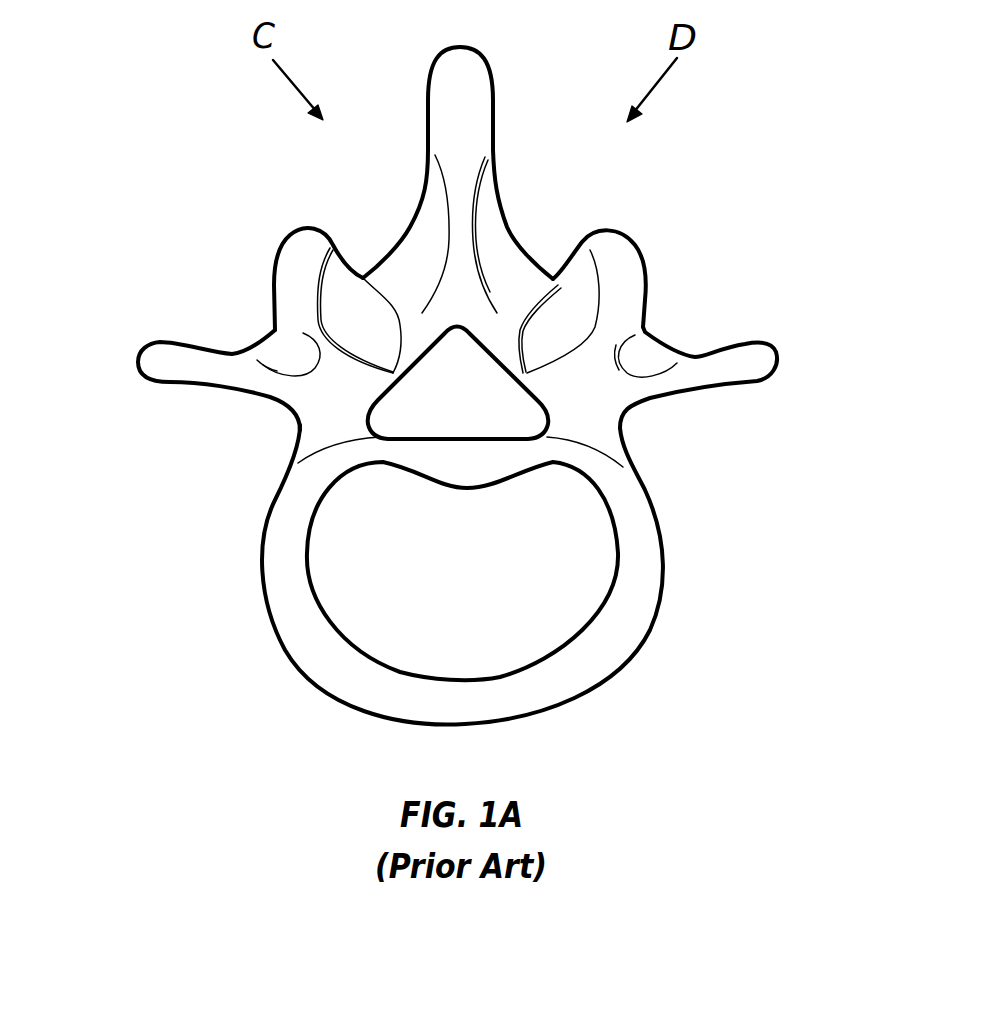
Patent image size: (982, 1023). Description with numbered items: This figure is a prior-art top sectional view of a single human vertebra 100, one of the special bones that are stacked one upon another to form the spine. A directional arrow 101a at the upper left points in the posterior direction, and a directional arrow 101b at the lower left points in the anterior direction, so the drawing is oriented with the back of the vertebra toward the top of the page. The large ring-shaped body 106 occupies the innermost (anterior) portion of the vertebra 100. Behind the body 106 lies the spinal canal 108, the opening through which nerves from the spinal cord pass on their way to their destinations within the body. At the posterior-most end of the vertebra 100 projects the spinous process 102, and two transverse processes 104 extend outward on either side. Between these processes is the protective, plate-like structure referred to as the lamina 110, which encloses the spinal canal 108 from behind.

The vertebra 100 is at (456, 362).
The directional arrow 101a is at (58, 45).
The directional arrow 101b is at (52, 665).
The spinous process 102 is at (460, 47).
The transverse processes 104 is at (162, 338).
The body 106 is at (660, 597).
The spinal canal 108 is at (490, 428).
The lamina 110 is at (525, 272).